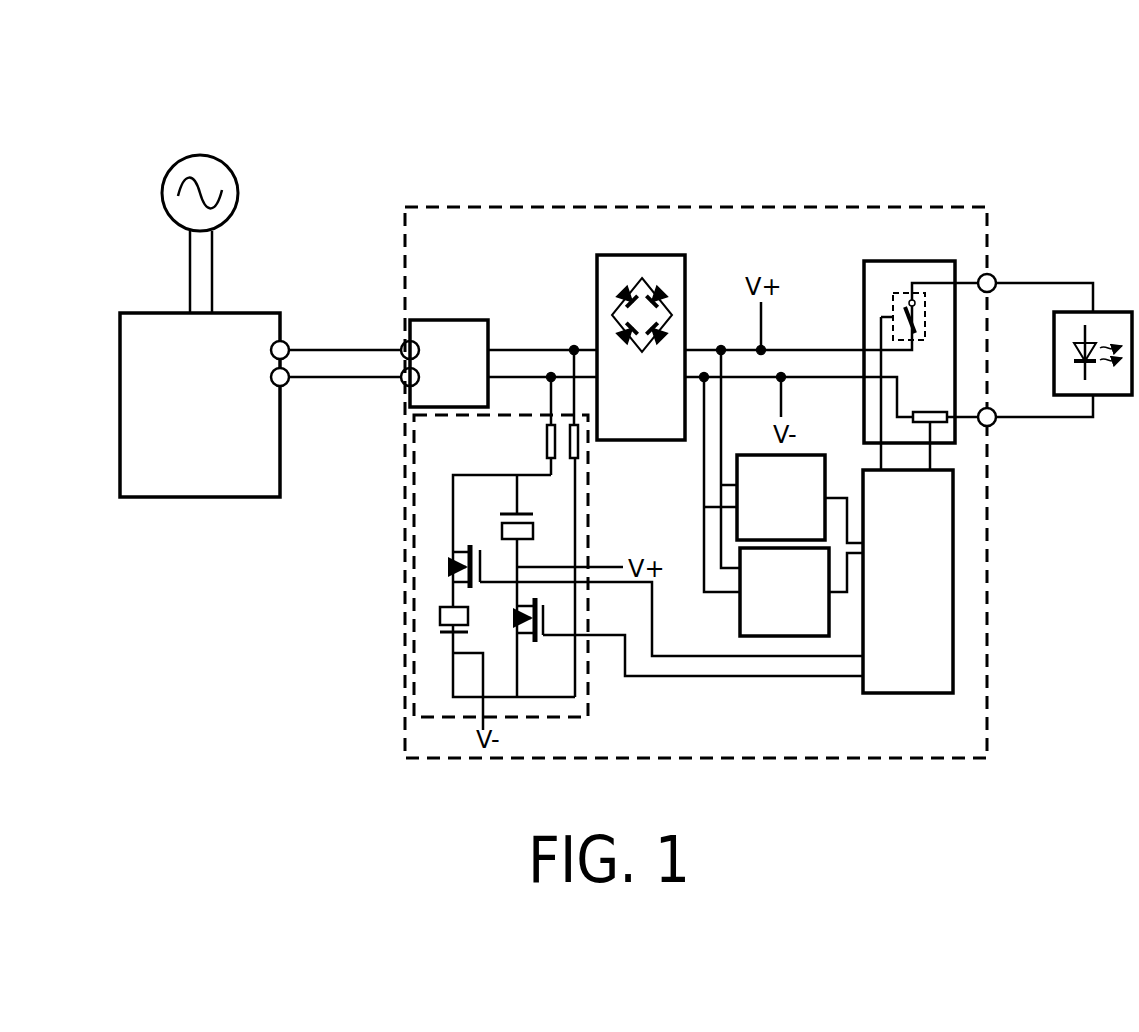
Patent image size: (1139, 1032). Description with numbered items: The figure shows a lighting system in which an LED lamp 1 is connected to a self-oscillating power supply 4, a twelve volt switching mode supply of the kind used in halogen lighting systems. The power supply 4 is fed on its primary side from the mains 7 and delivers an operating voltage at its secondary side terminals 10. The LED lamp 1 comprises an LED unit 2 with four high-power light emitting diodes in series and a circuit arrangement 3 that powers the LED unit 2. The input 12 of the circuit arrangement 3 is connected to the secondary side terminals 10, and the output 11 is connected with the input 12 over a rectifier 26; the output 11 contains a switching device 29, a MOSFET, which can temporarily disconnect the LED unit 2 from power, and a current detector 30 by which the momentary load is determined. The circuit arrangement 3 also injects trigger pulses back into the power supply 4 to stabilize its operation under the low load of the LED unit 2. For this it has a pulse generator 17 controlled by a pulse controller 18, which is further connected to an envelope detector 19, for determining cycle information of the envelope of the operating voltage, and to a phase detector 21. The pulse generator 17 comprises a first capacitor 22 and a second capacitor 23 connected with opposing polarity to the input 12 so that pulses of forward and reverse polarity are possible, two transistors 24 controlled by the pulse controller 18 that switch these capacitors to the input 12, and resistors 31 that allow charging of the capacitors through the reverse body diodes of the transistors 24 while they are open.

The LED lamp 1 is at (997, 122).
The LED unit 2 is at (1110, 312).
The circuit arrangement 3 is at (769, 207).
The self-oscillating power supply 4 is at (200, 405).
The mains 7 is at (218, 172).
The secondary side terminals 10 is at (304, 320).
The output 11 is at (930, 261).
The input 12 is at (442, 320).
The pulse generator 17 is at (440, 720).
The pulse controller 18 is at (908, 581).
The envelope detector 19 is at (810, 472).
The phase detector 21 is at (742, 618).
The first capacitor 22 is at (438, 618).
The second capacitor 23 is at (500, 531).
The transistors 24 is at (456, 553).
The rectifier 26 is at (651, 258).
The switching device 29 is at (893, 302).
The current detector 30 is at (934, 423).
The resistors 31 is at (568, 442).